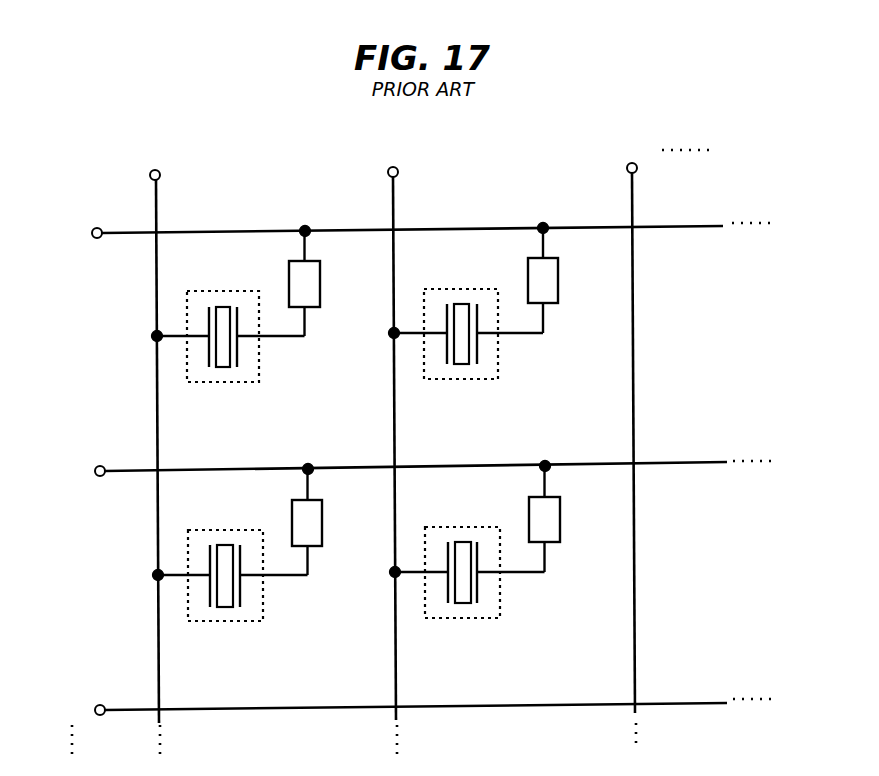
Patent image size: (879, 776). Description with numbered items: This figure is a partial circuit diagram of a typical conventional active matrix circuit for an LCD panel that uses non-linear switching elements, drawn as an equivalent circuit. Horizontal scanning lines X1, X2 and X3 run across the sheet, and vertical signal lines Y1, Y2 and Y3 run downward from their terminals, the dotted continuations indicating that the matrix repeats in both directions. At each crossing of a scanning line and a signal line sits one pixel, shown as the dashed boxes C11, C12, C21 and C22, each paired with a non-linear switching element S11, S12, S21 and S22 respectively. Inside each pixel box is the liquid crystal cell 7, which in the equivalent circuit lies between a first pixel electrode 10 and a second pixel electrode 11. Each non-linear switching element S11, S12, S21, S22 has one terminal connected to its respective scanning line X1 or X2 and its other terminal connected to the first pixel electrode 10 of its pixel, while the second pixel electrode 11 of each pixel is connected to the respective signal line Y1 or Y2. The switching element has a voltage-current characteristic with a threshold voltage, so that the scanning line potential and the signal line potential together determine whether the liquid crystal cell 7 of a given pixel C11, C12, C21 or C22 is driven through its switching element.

The scanning line X1 is at (393, 232).
The scanning line X2 is at (395, 470).
The scanning line X3 is at (396, 709).
The signal line Y1 is at (154, 433).
The signal line Y2 is at (392, 429).
The signal line Y3 is at (631, 424).
The pixel C11 is at (228, 331).
The pixel C12 is at (478, 288).
The pixel C21 is at (232, 528).
The pixel C22 is at (487, 525).
The non-linear switching element S11 is at (320, 293).
The non-linear switching element S12 is at (558, 292).
The non-linear switching element S21 is at (322, 532).
The non-linear switching element S22 is at (560, 528).
The liquid crystal cell 7 is at (222, 367).
The first pixel electrode 10 is at (238, 350).
The second pixel electrode 11 is at (209, 359).